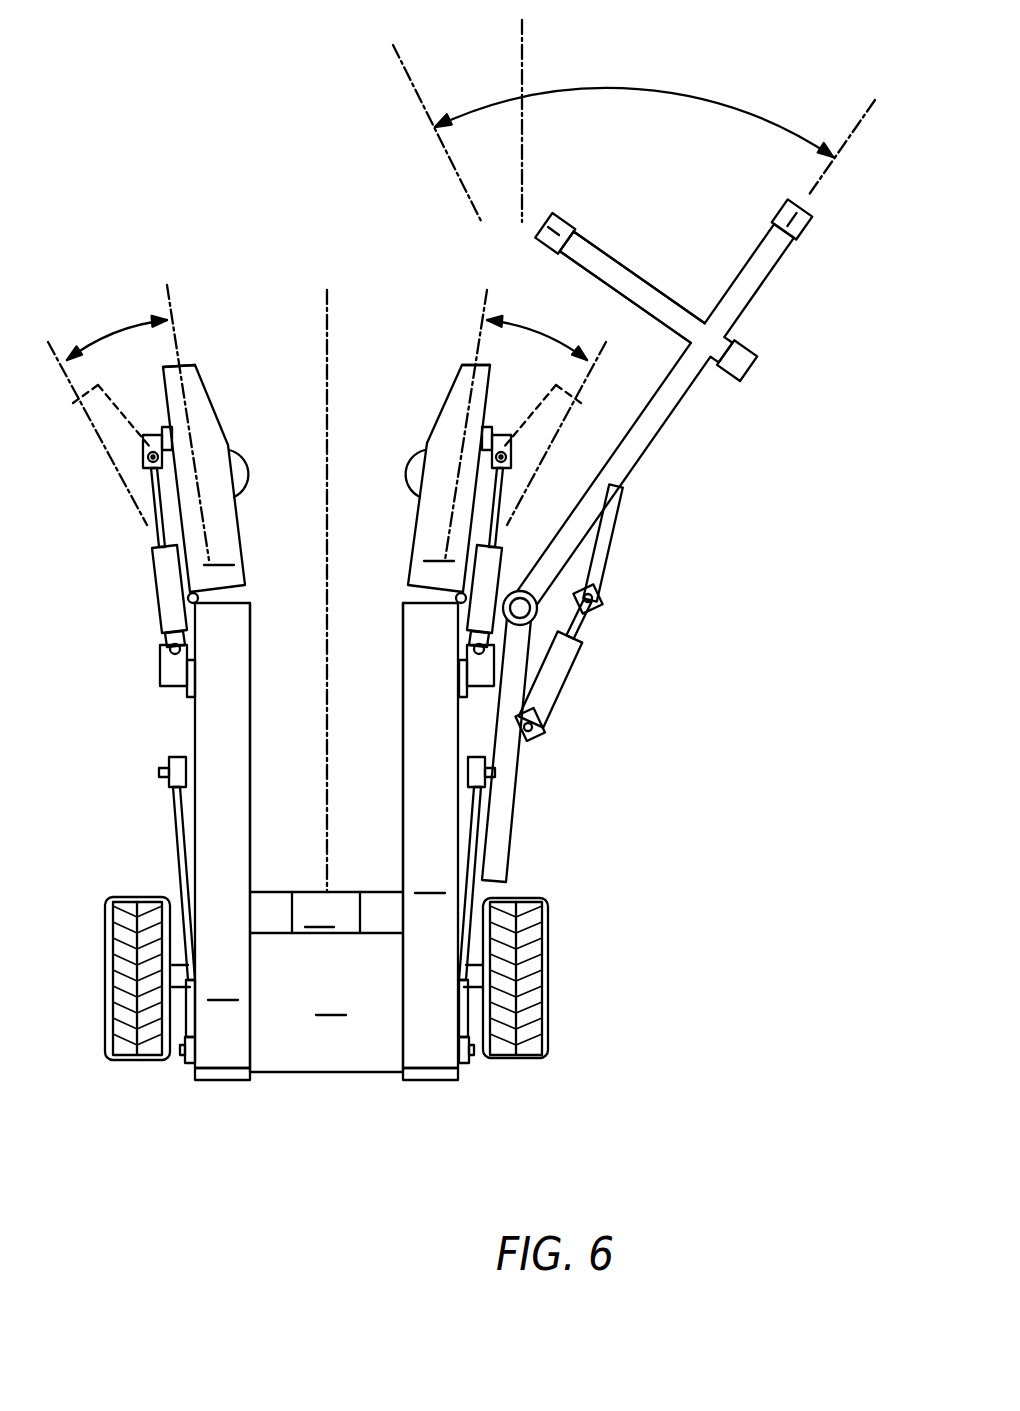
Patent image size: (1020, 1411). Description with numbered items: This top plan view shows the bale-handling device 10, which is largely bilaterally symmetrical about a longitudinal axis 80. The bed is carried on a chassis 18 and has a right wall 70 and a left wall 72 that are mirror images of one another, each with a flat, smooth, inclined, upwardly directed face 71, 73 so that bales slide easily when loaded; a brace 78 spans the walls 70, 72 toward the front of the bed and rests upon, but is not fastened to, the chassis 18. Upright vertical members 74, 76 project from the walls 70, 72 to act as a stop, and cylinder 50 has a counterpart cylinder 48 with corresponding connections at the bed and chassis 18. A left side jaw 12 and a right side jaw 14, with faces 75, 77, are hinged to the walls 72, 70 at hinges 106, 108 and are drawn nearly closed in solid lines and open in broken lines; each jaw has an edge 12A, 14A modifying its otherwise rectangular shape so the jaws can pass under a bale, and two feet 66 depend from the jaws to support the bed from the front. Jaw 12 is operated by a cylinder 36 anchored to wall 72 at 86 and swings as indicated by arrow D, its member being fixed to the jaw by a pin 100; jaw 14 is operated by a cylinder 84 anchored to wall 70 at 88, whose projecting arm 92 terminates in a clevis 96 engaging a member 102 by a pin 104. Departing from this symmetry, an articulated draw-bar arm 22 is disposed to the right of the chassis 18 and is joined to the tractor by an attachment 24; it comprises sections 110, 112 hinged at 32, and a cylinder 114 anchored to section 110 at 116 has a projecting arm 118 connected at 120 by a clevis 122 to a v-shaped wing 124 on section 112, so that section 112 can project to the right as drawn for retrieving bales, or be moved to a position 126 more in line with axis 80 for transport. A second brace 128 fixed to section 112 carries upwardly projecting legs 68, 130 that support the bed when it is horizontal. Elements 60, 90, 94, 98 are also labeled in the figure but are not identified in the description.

The device 10 is at (160, 208).
The left side jaw 12 is at (252, 545).
The edge of left side jaw 12A is at (208, 392).
The right side jaw 14 is at (408, 531).
The edge of right side jaw 14A is at (447, 388).
The chassis 18 is at (326, 982).
The articulated arm 22 is at (770, 326).
The attachment 24 is at (814, 217).
The hinge of arm sections 32 is at (528, 614).
The cylinder 36 is at (158, 598).
The cylinder 48 is at (470, 884).
The cylinder 50 is at (172, 862).
The wheel 60 is at (182, 1050).
The foot 66 is at (250, 472).
The leg 68 is at (552, 230).
The right wall 70 is at (403, 790).
The face of right wall 71 is at (430, 835).
The left wall 72 is at (252, 770).
The face of left wall 73 is at (222, 835).
The upright vertical member 74 is at (427, 1078).
The face of left jaw 75 is at (204, 438).
The upright vertical member 76 is at (203, 1072).
The face of right jaw 77 is at (449, 441).
The brace 78 is at (326, 912).
The longitudinal axis 80 is at (330, 345).
The cylinder 84 is at (463, 635).
The pivotal anchor 86 is at (146, 642).
The pivotal anchor 88 is at (450, 662).
The left cylinder rod 90 is at (160, 527).
The projecting arm 92 is at (500, 527).
The left rod pivot 94 is at (160, 466).
The clevis 96 is at (512, 470).
The left rod bracket 98 is at (143, 443).
The pin 100 is at (162, 460).
The member 102 is at (498, 438).
The pin 104 is at (510, 457).
The hinge 106 is at (200, 594).
The hinge 108 is at (458, 600).
The arm section 110 is at (500, 814).
The arm section 112 is at (690, 394).
The cylinder 114 is at (540, 720).
The pivotal anchor 116 is at (540, 738).
The projecting arm 118 is at (588, 615).
The pivotal connection 120 is at (612, 622).
The clevis 122 is at (603, 598).
The v-shaped wing 124 is at (607, 528).
The transport position 126 is at (418, 99).
The second brace 128 is at (646, 309).
The leg 130 is at (748, 372).
The arrow D is at (112, 333).